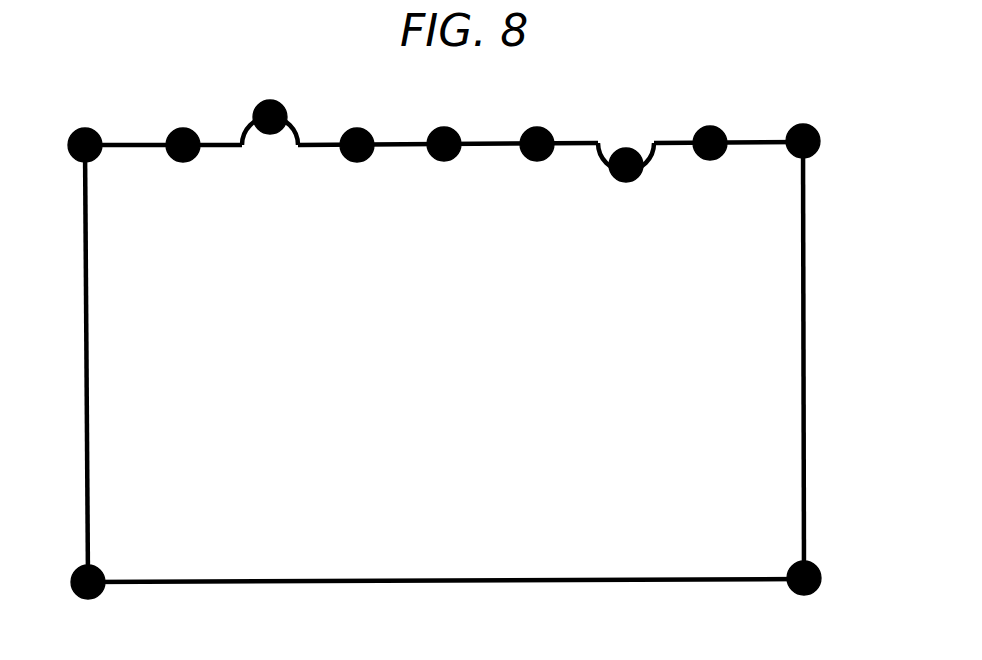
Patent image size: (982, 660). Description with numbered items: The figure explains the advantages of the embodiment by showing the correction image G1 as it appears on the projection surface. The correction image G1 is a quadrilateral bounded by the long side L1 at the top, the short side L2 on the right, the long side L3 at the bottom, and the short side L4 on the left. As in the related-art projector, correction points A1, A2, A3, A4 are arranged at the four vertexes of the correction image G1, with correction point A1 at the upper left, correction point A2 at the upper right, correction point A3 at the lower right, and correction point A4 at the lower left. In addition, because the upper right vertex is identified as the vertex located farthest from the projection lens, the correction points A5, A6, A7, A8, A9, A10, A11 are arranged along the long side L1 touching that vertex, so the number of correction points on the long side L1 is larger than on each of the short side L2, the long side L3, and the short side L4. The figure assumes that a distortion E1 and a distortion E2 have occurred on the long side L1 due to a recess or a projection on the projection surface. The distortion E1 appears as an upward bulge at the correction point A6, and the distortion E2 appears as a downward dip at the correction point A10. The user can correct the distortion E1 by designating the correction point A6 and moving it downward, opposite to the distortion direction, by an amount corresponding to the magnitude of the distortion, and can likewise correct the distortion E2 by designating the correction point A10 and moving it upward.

The correction image G1 is at (915, 93).
The long side L1 is at (402, 144).
The short side L2 is at (804, 362).
The long side L3 is at (450, 580).
The short side L4 is at (87, 394).
The distortion E1 is at (271, 153).
The distortion E2 is at (630, 131).
The correction point A1 is at (70, 136).
The correction point A2 is at (788, 132).
The correction point A3 is at (821, 577).
The correction point A4 is at (73, 575).
The correction point A5 is at (180, 128).
The correction point A6 is at (260, 102).
The correction point A7 is at (350, 128).
The correction point A8 is at (432, 128).
The correction point A9 is at (522, 128).
The correction point A10 is at (626, 183).
The correction point A11 is at (712, 161).